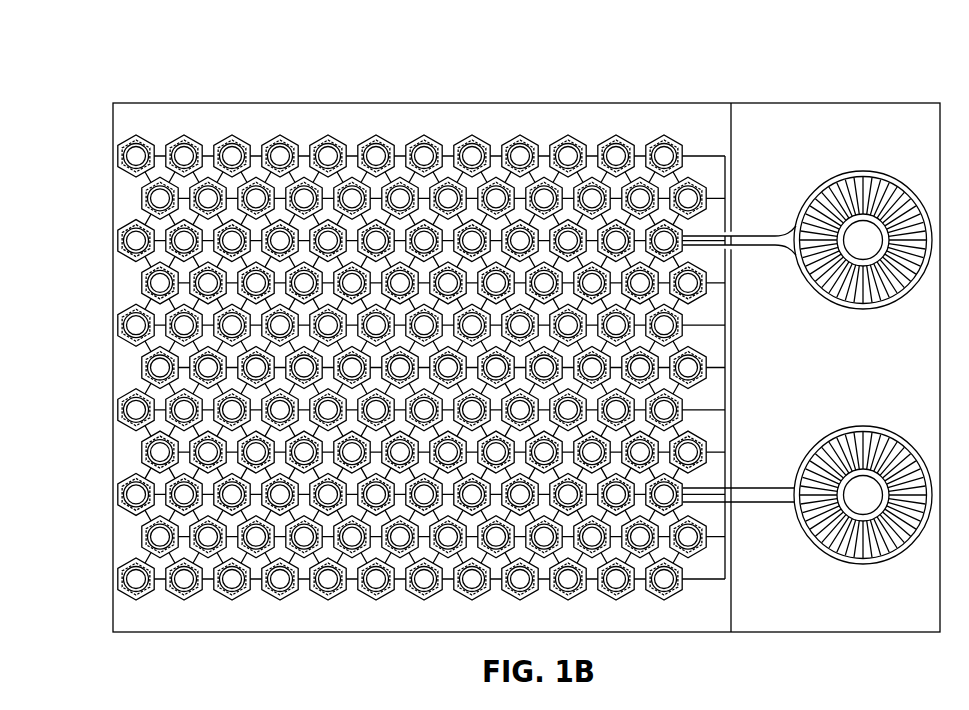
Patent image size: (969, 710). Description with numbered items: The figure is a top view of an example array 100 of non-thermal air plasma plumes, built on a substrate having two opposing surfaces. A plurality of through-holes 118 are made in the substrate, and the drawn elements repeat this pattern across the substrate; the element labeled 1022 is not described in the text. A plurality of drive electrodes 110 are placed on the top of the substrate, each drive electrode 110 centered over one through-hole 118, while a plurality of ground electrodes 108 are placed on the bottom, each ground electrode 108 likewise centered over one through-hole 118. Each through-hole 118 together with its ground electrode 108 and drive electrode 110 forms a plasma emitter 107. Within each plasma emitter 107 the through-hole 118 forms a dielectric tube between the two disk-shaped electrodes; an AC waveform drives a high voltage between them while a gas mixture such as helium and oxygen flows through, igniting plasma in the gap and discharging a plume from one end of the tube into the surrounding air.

The array 100 is at (450, 103).
The hexagonal reaction unit 1022 is at (668, 131).
The ground electrode 108 is at (122, 160).
The drive electrode 110 is at (121, 243).
The through-hole 118 is at (130, 325).
The plasma emitter 107 is at (122, 410).